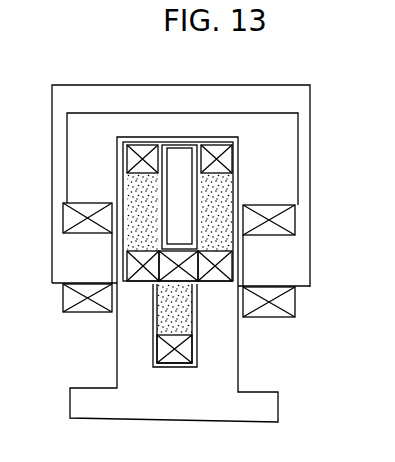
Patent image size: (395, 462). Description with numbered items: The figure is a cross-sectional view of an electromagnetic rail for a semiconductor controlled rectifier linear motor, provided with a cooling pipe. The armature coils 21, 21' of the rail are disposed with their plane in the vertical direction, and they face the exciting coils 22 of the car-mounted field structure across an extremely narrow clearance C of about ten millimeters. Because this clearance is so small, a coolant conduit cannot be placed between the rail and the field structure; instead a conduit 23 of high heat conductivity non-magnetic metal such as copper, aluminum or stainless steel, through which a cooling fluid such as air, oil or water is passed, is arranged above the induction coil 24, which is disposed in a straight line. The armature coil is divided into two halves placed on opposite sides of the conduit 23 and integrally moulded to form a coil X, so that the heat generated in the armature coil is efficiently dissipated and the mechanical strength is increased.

The armature coil 21 is at (88, 198).
The armature coil 21' is at (194, 240).
The exciting coil 22 is at (286, 300).
The conduit 23 is at (188, 149).
The induction coil 24 is at (188, 268).
The clearance C is at (92, 313).
The coil X is at (270, 315).